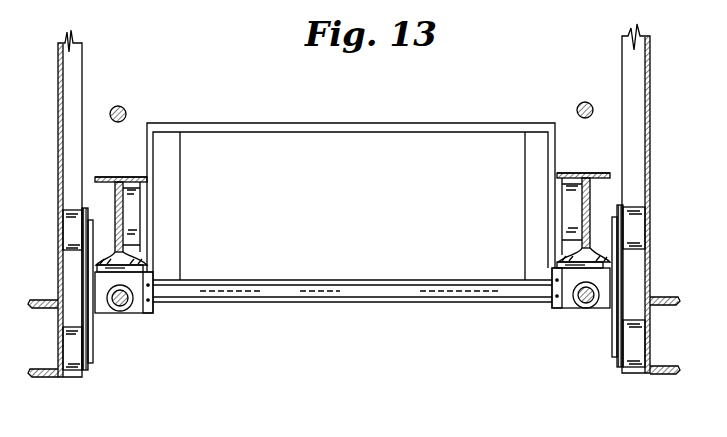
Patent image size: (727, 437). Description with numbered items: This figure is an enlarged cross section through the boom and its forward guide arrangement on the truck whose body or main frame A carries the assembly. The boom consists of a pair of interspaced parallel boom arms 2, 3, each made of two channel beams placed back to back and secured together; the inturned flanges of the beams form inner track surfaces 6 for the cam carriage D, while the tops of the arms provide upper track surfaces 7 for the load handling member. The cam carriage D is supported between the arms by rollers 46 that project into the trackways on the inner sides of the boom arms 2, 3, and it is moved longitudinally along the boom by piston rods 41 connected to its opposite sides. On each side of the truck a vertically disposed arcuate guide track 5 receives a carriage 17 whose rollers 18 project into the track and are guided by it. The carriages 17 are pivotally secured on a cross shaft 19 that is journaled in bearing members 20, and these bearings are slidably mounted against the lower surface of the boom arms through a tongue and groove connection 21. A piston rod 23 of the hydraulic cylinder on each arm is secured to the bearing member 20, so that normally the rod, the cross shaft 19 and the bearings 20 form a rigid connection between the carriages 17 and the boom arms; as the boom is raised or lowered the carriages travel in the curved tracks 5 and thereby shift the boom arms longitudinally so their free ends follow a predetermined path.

The boom arm 2 is at (120, 177).
The boom arm 3 is at (587, 173).
The arcuate guide track 5 is at (58, 95).
The inner track surface 6 is at (133, 255).
The upper track surface 7 is at (133, 177).
The carriage 17 is at (95, 337).
The roller 18 is at (72, 225).
The cross shaft 19 is at (272, 301).
The bearing member 20 is at (137, 312).
The tongue and groove connection 21 is at (140, 262).
The piston rod 23 is at (125, 310).
The piston rod 41 is at (124, 107).
The roller 46 is at (132, 200).
The main frame A is at (45, 380).
The cam carriage D is at (356, 124).